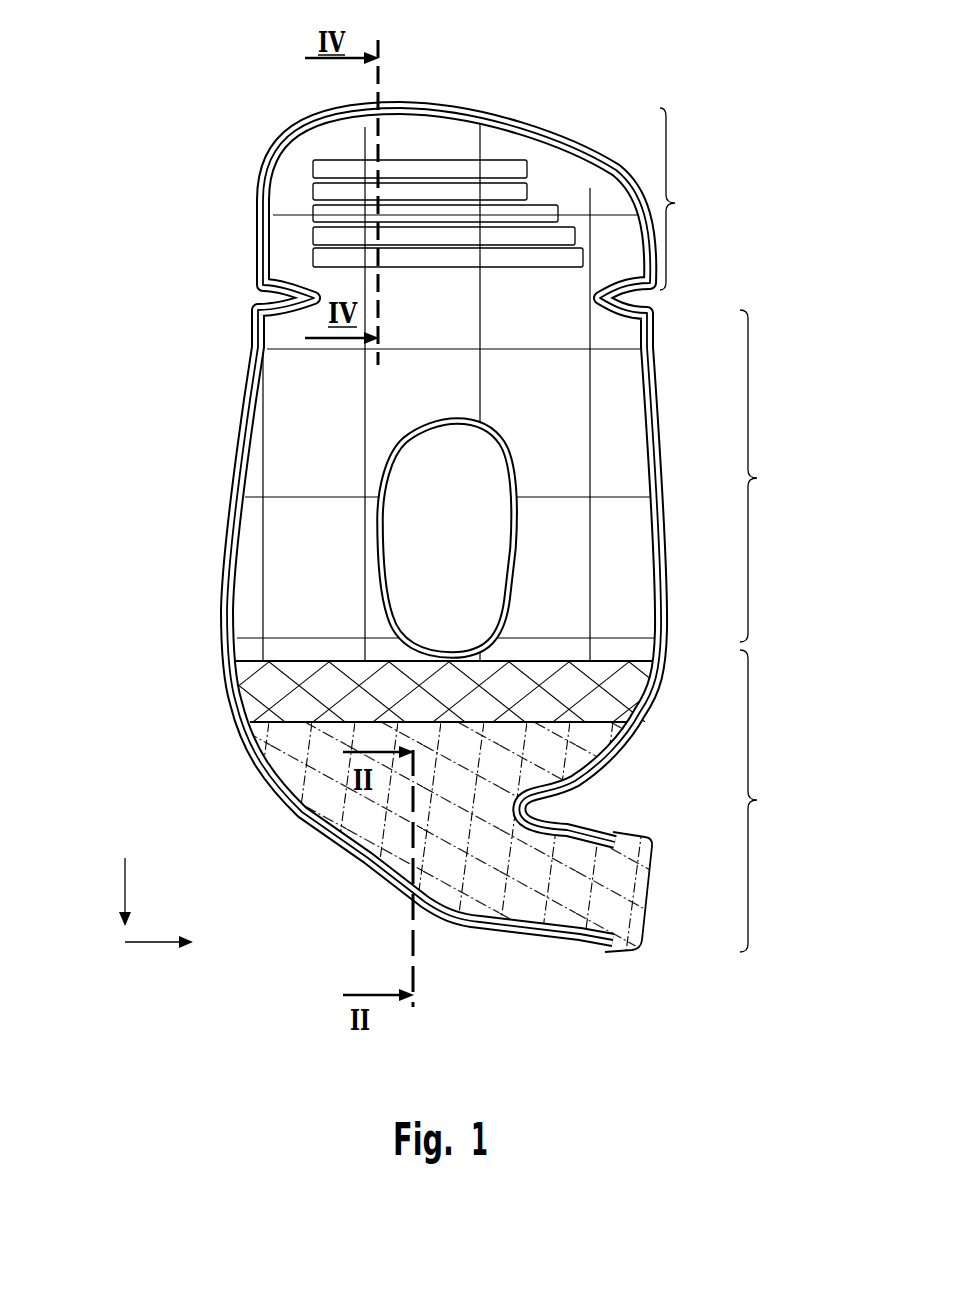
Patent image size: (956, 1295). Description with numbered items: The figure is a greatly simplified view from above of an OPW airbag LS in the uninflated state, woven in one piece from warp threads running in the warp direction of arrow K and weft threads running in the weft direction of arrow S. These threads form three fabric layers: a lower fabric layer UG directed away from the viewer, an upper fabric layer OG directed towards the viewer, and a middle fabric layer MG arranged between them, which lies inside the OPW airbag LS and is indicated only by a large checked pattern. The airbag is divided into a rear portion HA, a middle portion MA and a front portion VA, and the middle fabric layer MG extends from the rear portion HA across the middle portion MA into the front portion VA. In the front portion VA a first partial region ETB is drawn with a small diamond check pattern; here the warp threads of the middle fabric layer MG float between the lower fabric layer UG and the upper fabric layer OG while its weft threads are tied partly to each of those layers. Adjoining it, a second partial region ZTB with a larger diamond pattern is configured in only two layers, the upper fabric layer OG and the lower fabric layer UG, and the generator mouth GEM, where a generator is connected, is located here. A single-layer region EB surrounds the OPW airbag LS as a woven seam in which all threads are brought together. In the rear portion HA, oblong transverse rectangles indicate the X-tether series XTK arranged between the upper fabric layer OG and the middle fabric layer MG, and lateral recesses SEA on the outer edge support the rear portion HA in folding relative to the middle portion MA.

The OPW airbag LS is at (165, 125).
The X-tether series XTK is at (328, 166).
The single-layer region EB is at (426, 122).
The lower fabric layer UG is at (518, 124).
The upper fabric layer OG is at (555, 185).
The rear portion HA is at (689, 199).
The lateral recesses SEA is at (262, 298).
The middle portion MA is at (770, 476).
The middle fabric layer MG is at (278, 572).
The first partial region ETB is at (277, 696).
The front portion VA is at (769, 801).
The generator mouth GEM is at (613, 890).
The second partial region ZTB is at (477, 880).
The warp direction arrow K is at (125, 883).
The weft direction arrow S is at (152, 943).